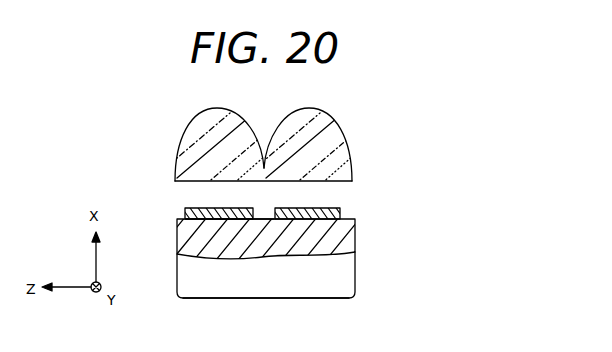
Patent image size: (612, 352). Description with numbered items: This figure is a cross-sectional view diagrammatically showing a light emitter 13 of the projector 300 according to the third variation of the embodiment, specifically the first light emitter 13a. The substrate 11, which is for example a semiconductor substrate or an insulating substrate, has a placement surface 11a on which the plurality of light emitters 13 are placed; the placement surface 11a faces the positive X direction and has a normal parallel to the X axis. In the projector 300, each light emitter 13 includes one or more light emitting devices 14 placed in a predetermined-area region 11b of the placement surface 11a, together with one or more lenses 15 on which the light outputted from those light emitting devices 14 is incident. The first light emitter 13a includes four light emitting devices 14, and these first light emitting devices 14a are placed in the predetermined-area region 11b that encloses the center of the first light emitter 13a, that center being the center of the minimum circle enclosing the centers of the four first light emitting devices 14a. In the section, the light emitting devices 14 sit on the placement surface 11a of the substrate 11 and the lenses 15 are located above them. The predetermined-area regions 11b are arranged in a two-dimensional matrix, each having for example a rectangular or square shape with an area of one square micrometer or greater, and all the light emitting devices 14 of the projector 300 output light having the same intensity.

The projector 300 is at (462, 123).
The light emitter 13 is at (279, 145).
The first light emitter 13a is at (364, 136).
The lens 15 is at (206, 158).
The light emitting device 14 is at (342, 211).
The first light emitting device 14a is at (200, 210).
The substrate 11 is at (355, 243).
The placement surface 11a is at (262, 220).
The predetermined-area region 11b is at (265, 299).